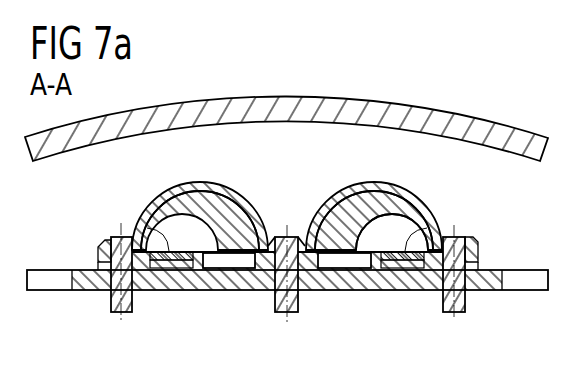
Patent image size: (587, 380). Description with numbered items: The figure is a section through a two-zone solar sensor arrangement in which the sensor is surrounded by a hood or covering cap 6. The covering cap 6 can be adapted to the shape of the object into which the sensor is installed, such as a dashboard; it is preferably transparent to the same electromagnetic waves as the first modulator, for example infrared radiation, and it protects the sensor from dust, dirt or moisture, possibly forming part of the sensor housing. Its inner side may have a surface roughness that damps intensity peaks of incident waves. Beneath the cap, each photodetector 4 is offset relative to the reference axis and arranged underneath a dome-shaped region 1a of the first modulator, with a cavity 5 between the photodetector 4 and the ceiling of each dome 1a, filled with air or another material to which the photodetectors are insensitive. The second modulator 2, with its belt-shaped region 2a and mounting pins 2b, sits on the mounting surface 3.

The covering cap 6 is at (284, 101).
The dome-shaped region of first modulator 1a is at (170, 193).
The belt-shaped region of second modulator 2a is at (403, 190).
The photodetector 4 is at (140, 222).
The cavity 5 is at (410, 231).
The second modulator 2 is at (476, 240).
The mounting pin of second modulator 2b is at (125, 314).
The mounting surface 3 is at (482, 288).